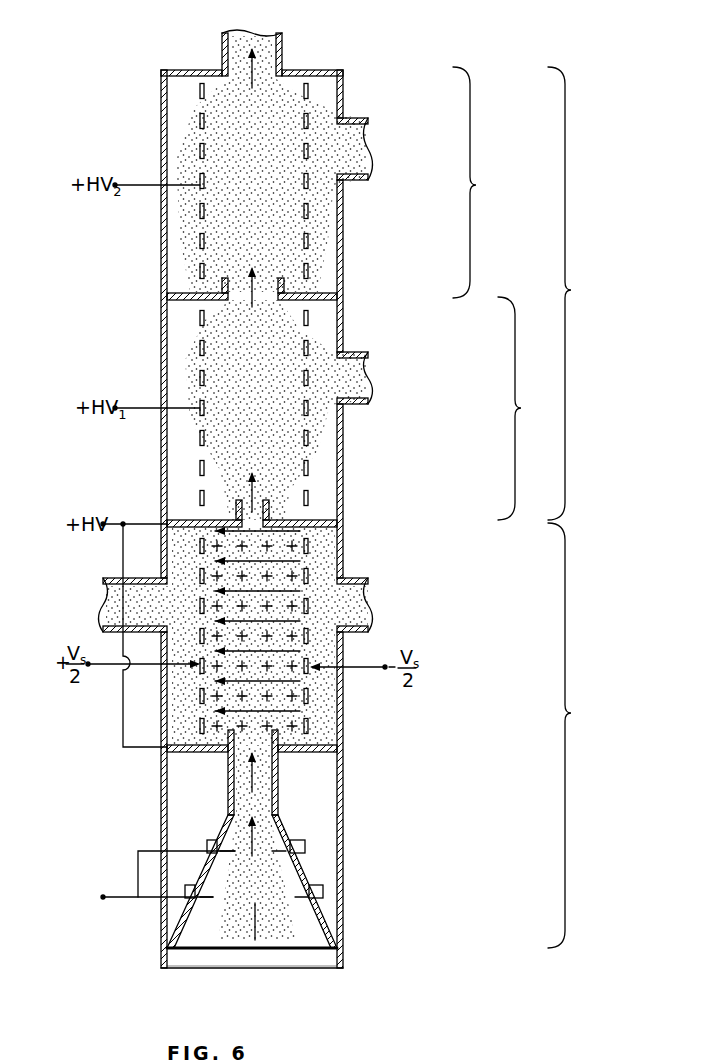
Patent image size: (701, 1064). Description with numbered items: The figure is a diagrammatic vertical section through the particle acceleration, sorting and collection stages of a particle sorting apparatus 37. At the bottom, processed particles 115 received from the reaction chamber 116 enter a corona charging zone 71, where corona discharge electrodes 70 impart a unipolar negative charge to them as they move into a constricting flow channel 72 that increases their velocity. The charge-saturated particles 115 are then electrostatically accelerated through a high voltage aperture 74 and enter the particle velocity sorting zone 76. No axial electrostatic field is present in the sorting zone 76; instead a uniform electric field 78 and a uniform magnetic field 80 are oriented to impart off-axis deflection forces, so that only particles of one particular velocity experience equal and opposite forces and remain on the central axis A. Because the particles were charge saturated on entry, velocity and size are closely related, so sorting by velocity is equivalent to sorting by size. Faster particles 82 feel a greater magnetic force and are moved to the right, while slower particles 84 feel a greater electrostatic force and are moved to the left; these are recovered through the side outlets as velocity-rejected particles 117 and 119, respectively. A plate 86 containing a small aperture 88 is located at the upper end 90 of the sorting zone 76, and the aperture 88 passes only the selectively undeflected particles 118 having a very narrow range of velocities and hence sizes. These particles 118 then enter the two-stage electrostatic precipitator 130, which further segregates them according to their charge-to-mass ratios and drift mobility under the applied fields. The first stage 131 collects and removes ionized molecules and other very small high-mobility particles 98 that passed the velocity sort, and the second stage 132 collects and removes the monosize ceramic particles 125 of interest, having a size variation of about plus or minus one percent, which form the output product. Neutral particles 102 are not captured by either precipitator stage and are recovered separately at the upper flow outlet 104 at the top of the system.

The particle sorting apparatus 37 is at (573, 735).
The corona discharge electrodes 70 is at (305, 845).
The corona charging zone 71 is at (287, 893).
The constricting flow channel 72 is at (305, 873).
The high voltage aperture 74 is at (270, 728).
The particle velocity sorting zone 76 is at (498, 523).
The uniform electric field 78 is at (307, 587).
The uniform magnetic field 80 is at (215, 703).
The faster particles 82 is at (293, 647).
The slower particles 84 is at (200, 642).
The plate 86 is at (310, 521).
The small aperture 88 is at (255, 517).
The upper end of particle velocity sorting zone 90 is at (348, 525).
The very small high-mobility particles 98 is at (350, 356).
The neutral particles 102 is at (268, 66).
The upper flow outlet 104 is at (238, 53).
The processed particles 115 is at (263, 920).
The reaction chamber 116 is at (178, 962).
The velocity-rejected particles 117 is at (350, 606).
The selectively undeflected particles 118 is at (268, 457).
The velocity-rejected particles 119 is at (115, 603).
The monosize ceramic particles 125 is at (313, 128).
The two-stage electrostatic precipitator 130 is at (579, 293).
The first stage 131 is at (528, 408).
The second stage 132 is at (484, 182).